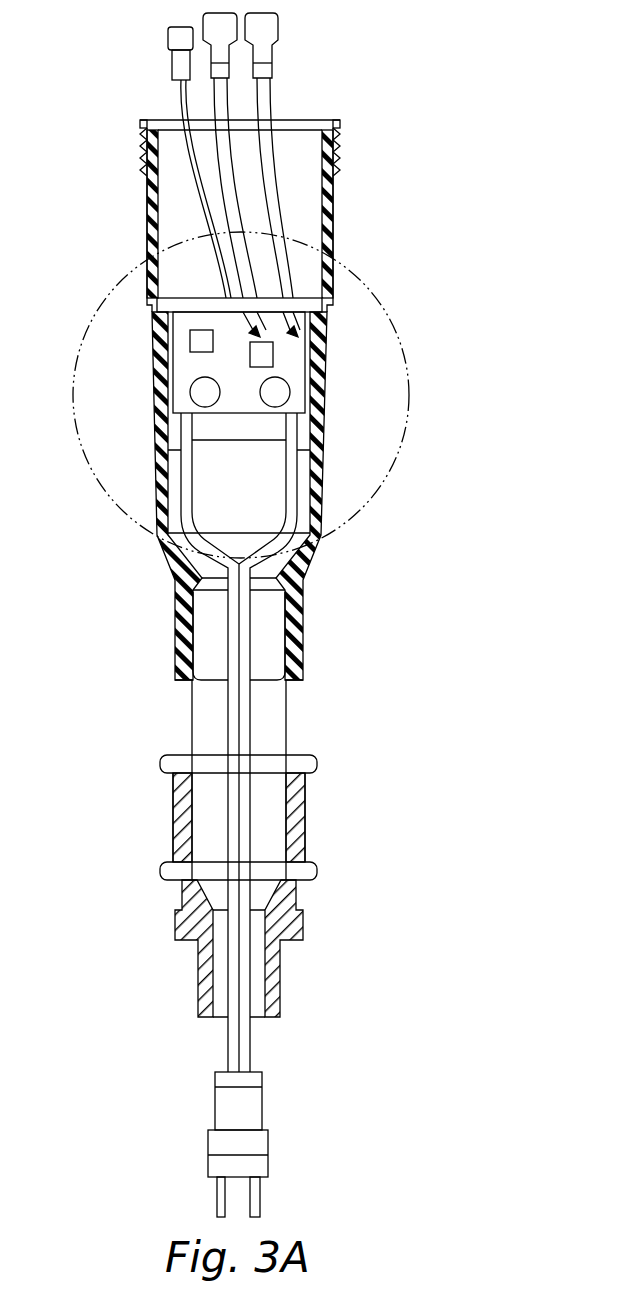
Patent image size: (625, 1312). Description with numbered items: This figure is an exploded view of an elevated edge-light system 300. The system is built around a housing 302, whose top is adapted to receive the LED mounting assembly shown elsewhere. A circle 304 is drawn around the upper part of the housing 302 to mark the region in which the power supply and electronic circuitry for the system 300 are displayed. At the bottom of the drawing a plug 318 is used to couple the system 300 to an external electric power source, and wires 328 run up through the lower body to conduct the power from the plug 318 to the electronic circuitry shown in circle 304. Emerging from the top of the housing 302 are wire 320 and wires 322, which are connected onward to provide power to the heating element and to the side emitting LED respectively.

The elevated edge-light system 300 is at (140, 623).
The housing 302 is at (146, 217).
The circle 304 is at (103, 300).
The plug 318 is at (253, 1108).
The wire 320 is at (180, 96).
The wires 322 is at (223, 90).
The wires 328 is at (242, 719).